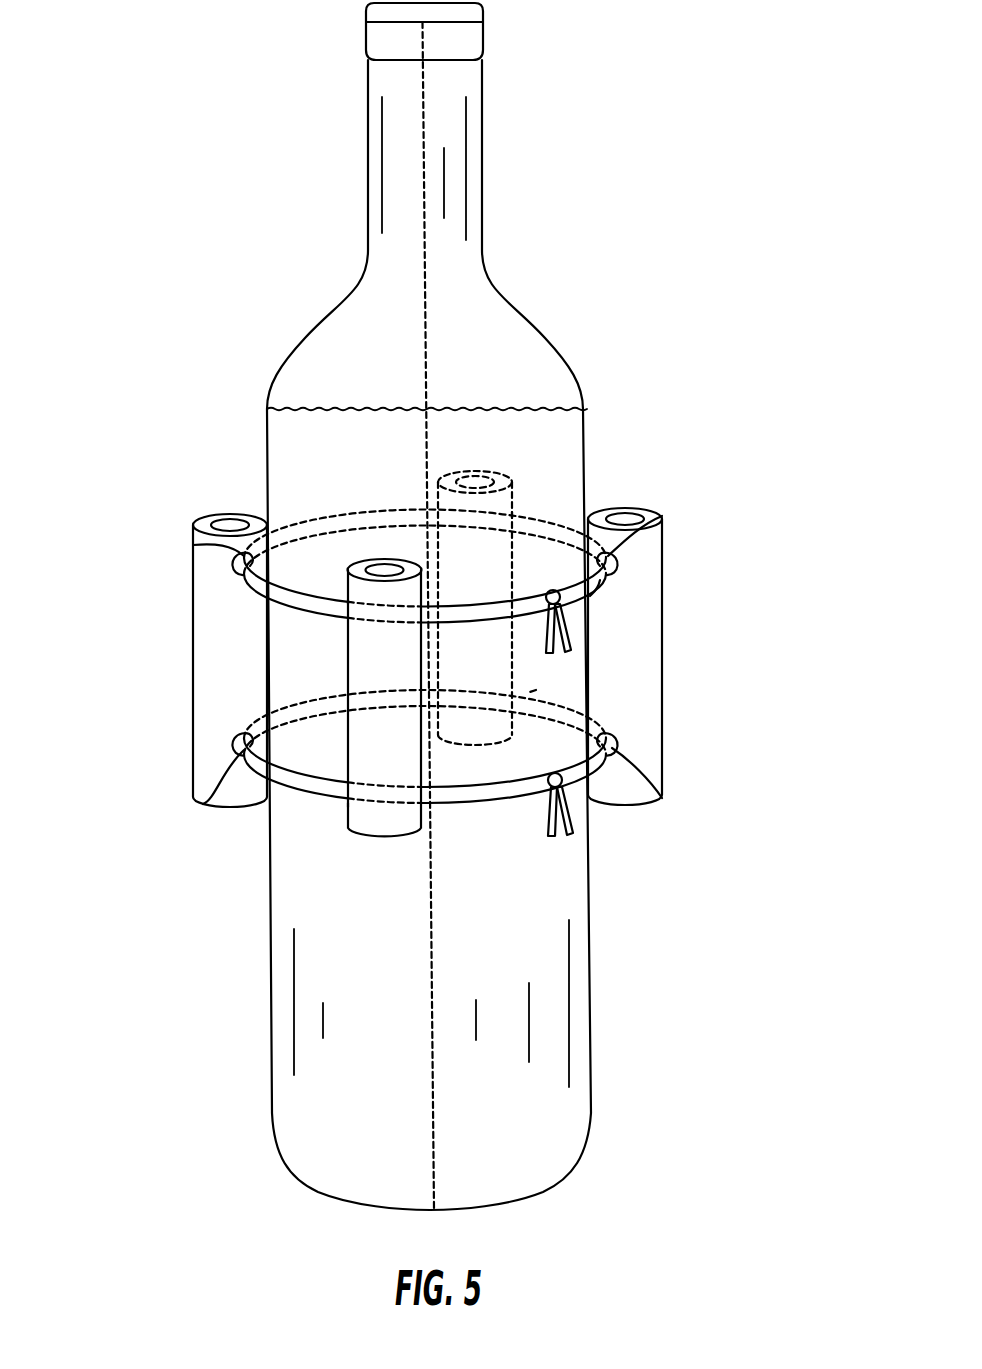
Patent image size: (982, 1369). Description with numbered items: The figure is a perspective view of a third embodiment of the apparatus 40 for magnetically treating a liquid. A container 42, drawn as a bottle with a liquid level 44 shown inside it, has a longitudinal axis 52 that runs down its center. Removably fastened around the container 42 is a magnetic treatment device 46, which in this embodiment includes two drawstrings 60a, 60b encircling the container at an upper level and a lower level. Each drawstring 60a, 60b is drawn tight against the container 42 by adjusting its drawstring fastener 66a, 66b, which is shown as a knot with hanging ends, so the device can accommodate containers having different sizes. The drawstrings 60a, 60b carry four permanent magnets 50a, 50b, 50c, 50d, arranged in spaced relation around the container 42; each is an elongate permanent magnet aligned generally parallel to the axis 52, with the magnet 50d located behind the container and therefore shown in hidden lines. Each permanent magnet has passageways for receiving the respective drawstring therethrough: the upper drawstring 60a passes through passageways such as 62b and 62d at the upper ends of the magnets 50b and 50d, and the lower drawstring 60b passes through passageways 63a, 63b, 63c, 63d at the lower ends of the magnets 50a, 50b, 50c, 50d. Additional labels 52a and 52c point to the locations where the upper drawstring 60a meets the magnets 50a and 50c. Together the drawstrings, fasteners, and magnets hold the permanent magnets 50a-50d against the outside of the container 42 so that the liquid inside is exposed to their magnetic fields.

The apparatus for treating a liquid 40 is at (738, 112).
The container 42 is at (483, 190).
The liquid level 44 is at (538, 407).
The magnetic treatment device 46 is at (184, 686).
The axis 52 is at (423, 86).
The permanent magnet 50a is at (360, 838).
The permanent magnet 50b is at (664, 757).
The permanent magnet 50c is at (193, 637).
The permanent magnet 50d is at (512, 490).
The upper attachment of first holder 52a is at (348, 600).
The upper attachment strap of third holder 52c is at (193, 546).
The passageway 62b is at (660, 512).
The passageway 62d is at (512, 512).
The passageway 63a is at (348, 803).
The passageway 63b is at (665, 792).
The passageway 63c is at (204, 804).
The passageway 63d is at (536, 690).
The drawstring 60a is at (600, 590).
The drawstring 60b is at (592, 796).
The drawstring fastener 66a is at (562, 598).
The drawstring fastener 66b is at (577, 790).